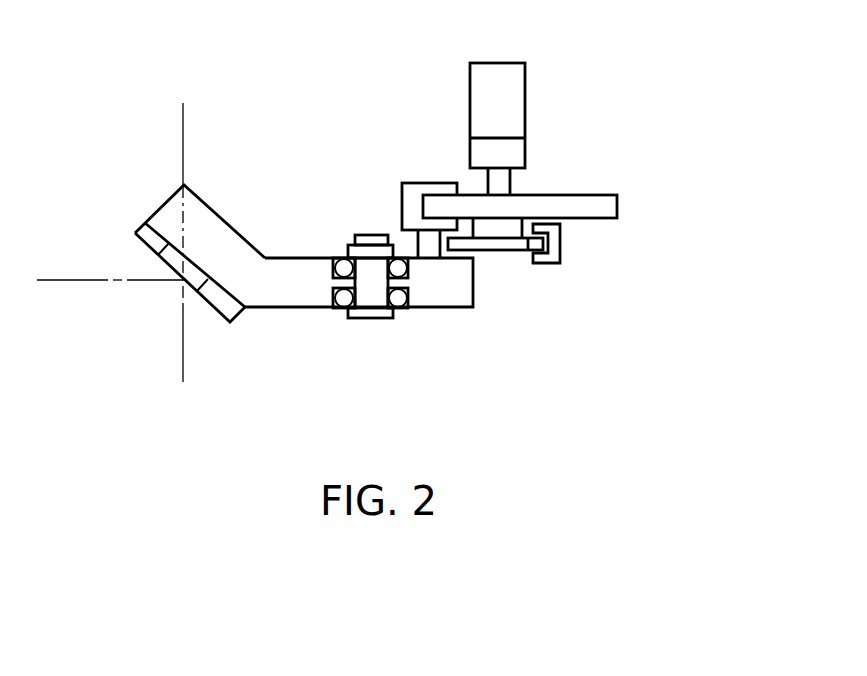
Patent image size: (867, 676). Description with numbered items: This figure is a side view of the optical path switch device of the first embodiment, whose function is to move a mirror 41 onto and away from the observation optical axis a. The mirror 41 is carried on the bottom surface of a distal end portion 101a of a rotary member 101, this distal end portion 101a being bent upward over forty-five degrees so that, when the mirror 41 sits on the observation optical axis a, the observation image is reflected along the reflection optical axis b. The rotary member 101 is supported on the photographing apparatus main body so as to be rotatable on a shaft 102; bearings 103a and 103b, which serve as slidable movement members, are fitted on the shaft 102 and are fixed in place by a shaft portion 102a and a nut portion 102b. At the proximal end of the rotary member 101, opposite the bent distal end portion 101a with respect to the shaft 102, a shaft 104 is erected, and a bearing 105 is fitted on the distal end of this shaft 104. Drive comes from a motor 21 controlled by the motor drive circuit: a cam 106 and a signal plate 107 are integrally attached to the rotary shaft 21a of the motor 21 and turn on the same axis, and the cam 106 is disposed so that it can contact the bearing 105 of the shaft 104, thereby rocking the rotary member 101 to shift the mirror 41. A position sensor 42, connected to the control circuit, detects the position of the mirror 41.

The motor 21 is at (500, 63).
The rotary shaft 21a is at (502, 187).
The mirror 41 is at (145, 228).
The position sensor 42 is at (560, 243).
The rotary member 101 is at (263, 302).
The distal end portion 101a is at (223, 213).
The shaft 102 is at (365, 300).
The shaft portion 102a is at (372, 320).
The nut portion 102b is at (372, 234).
The bearing 103a is at (343, 258).
The bearing 103b is at (398, 313).
The shaft 104 is at (428, 250).
The bearing 105 is at (417, 182).
The cam 106 is at (617, 207).
The signal plate 107 is at (495, 250).
The observation optical axis a is at (181, 335).
The reflection optical axis b is at (55, 282).